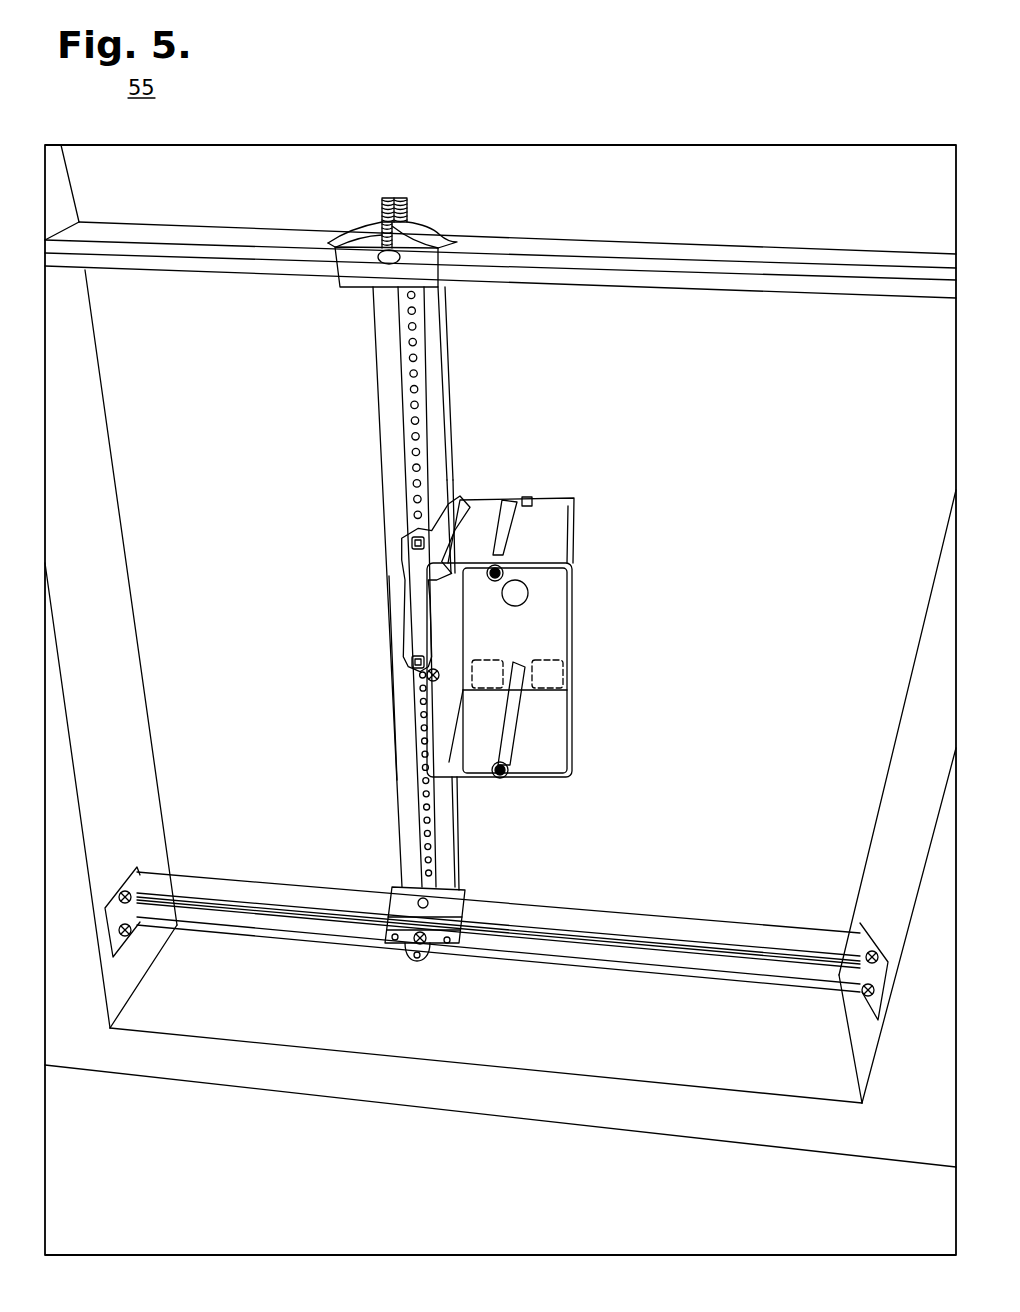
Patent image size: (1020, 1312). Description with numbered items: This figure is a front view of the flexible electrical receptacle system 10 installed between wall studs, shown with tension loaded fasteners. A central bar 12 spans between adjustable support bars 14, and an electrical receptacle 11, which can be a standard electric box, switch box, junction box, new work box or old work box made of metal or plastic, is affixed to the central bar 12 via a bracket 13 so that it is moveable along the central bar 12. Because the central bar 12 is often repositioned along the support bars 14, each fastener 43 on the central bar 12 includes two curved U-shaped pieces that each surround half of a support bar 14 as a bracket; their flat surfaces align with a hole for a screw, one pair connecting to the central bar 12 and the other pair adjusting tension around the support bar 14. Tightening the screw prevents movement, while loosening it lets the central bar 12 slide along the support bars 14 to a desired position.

The flexible electrical receptacle system 10 is at (524, 114).
The electrical receptacle 11 is at (578, 627).
The central bar 12 is at (450, 400).
The bracket 13 is at (401, 538).
The support bar 14 is at (308, 918).
The fastener 43 is at (455, 947).